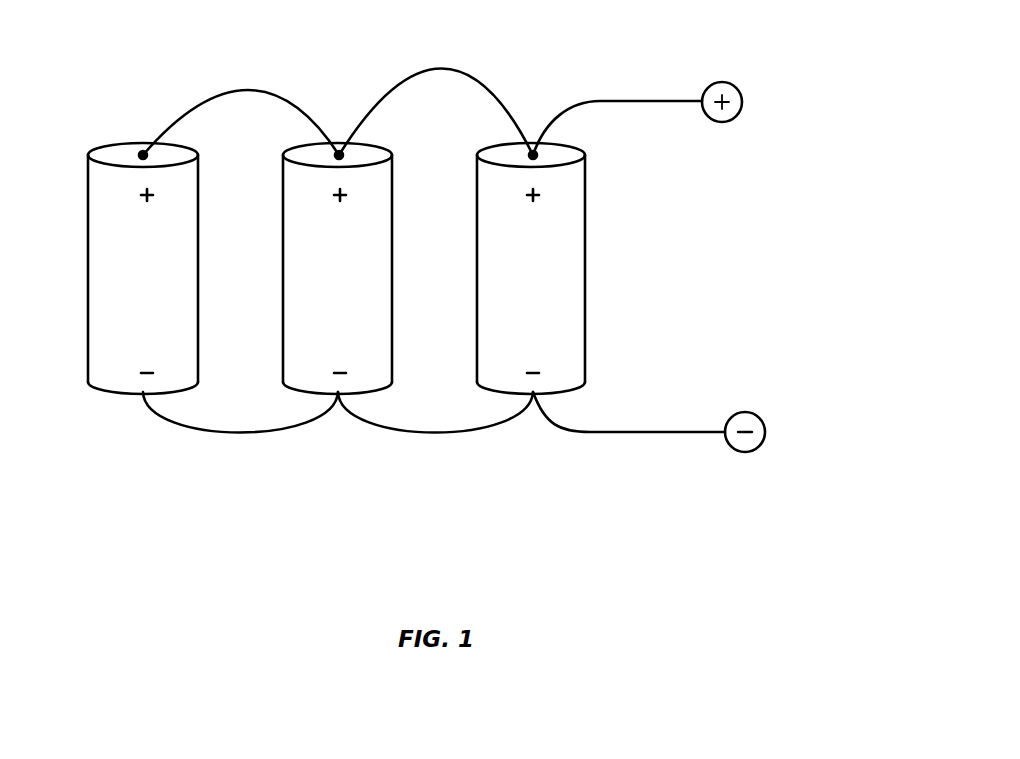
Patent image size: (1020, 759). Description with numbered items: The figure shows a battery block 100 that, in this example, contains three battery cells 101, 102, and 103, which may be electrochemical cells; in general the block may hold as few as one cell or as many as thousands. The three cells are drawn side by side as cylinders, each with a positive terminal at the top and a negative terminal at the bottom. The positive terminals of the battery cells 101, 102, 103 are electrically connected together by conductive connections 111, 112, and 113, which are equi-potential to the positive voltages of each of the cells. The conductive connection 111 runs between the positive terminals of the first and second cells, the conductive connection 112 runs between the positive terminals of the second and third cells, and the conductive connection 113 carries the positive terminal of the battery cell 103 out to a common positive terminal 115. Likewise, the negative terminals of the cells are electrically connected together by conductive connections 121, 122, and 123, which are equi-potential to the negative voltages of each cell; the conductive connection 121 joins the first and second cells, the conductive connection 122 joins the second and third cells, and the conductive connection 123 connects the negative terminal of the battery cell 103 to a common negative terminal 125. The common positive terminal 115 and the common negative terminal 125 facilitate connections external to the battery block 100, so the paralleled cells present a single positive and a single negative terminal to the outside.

The battery block 100 is at (845, 193).
The battery cell 101 is at (88, 292).
The battery cell 102 is at (283, 283).
The battery cell 103 is at (477, 290).
The conductive connection 111 is at (250, 95).
The conductive connection 112 is at (450, 67).
The conductive connection 113 is at (600, 101).
The common positive terminal 115 is at (738, 88).
The conductive connection 121 is at (230, 435).
The conductive connection 122 is at (427, 435).
The conductive connection 123 is at (596, 433).
The common negative terminal 125 is at (760, 416).